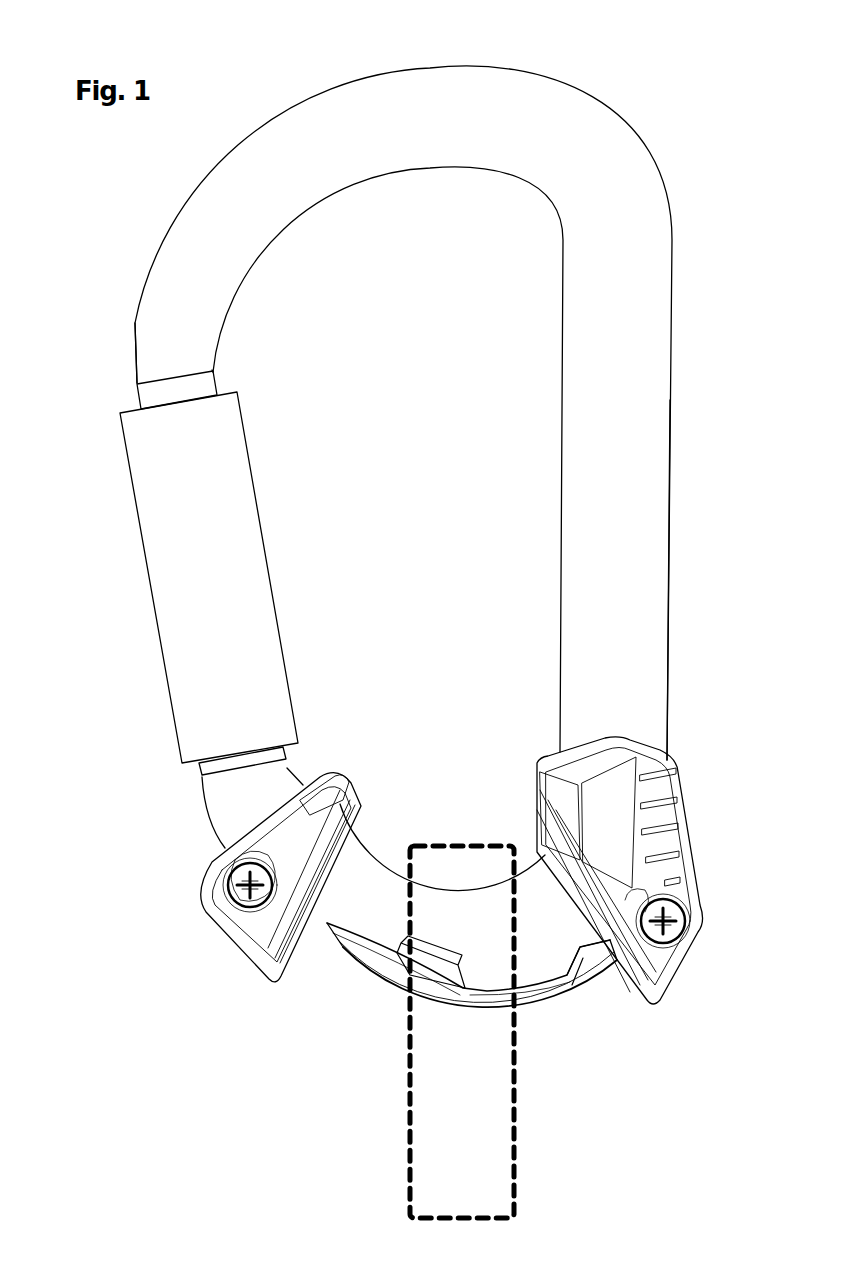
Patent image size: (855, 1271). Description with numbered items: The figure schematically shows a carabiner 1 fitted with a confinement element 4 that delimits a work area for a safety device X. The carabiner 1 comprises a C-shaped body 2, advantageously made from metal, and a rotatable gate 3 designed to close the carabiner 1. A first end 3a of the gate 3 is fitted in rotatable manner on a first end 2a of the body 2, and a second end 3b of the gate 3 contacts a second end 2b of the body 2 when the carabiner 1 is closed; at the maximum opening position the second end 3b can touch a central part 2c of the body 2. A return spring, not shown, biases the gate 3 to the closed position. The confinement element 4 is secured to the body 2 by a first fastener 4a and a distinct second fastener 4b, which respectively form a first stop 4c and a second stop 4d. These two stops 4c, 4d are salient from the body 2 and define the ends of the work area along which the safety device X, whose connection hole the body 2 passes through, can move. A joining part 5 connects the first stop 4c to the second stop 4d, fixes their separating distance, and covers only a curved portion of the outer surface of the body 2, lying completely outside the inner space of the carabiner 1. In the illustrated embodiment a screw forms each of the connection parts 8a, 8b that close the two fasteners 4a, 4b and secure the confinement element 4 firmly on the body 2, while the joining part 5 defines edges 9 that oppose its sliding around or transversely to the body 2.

The carabiner 1 is at (302, 22).
The body 2 is at (548, 92).
The first end of body 2a is at (220, 805).
The second end of body 2b is at (158, 352).
The central part of body 2c is at (645, 390).
The gate 3 is at (165, 605).
The first end of gate 3a is at (188, 727).
The second end of gate 3b is at (142, 460).
The confinement element 4 is at (706, 802).
The first fastener 4a is at (195, 888).
The second fastener 4b is at (665, 838).
The first stop 4c is at (350, 800).
The second stop 4d is at (545, 830).
The joining part 5 is at (345, 963).
The first connection part 8a is at (240, 904).
The second connection part 8b is at (665, 920).
The edges 9 is at (585, 975).
The safety device X is at (515, 1130).